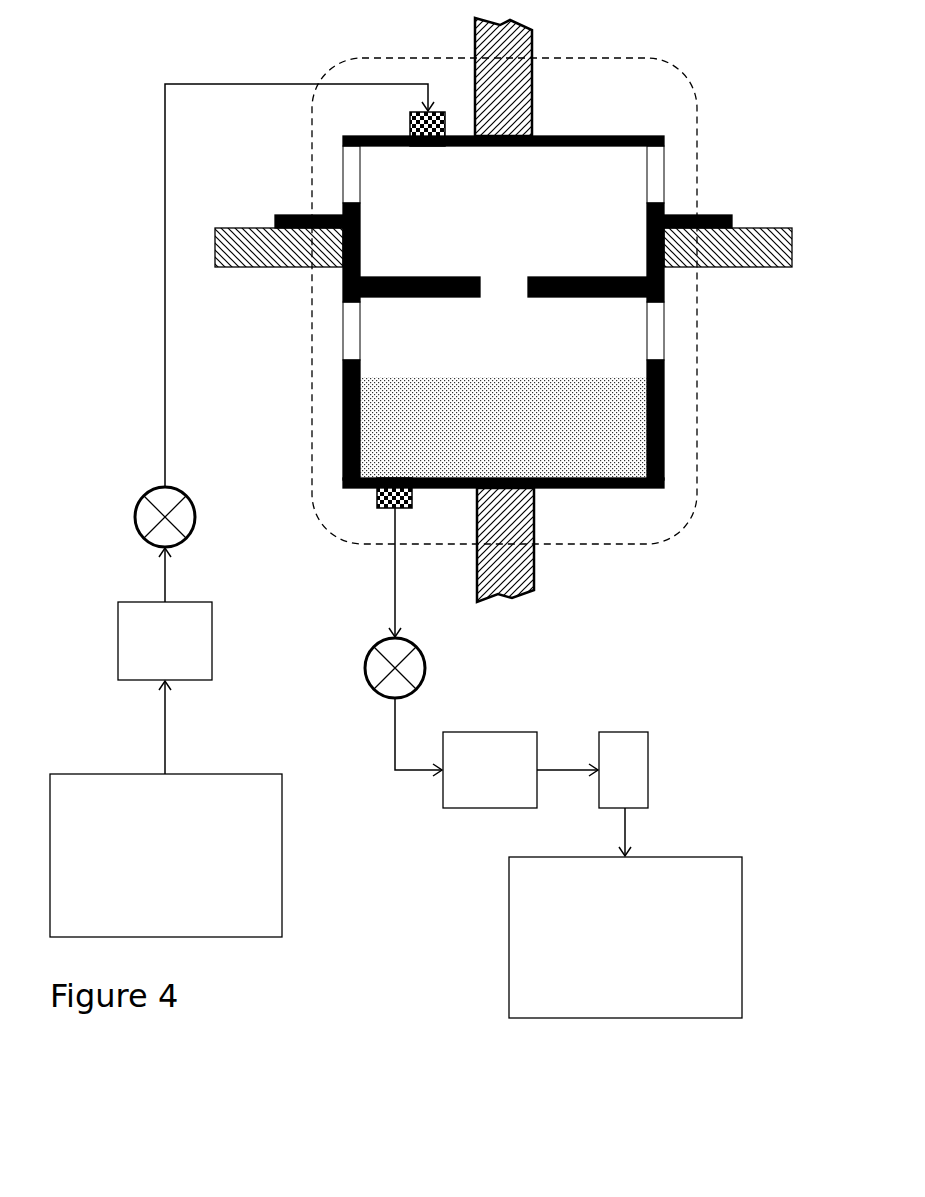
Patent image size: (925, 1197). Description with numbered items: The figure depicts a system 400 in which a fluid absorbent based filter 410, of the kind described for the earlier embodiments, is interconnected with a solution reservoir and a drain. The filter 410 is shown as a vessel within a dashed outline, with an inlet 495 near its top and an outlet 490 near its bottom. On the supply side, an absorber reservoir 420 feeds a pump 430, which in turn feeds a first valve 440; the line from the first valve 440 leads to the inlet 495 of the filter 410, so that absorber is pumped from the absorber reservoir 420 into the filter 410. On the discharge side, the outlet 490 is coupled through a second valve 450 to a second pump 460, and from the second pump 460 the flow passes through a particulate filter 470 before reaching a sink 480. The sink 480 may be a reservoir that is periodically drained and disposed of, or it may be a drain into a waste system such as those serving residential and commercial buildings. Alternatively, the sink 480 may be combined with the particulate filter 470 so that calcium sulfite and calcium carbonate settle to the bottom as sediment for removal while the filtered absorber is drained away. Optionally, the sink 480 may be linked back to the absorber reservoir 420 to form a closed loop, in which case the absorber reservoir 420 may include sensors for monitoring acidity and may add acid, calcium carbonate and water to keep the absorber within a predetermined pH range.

The system 400 is at (421, 518).
The filter 410 is at (503, 310).
The absorber reservoir 420 is at (166, 855).
The pump 430 is at (165, 641).
The first valve 440 is at (138, 517).
The second valve 450 is at (368, 668).
The second pump 460 is at (490, 770).
The particulate filter 470 is at (650, 770).
The sink 480 is at (625, 937).
The outlet 490 is at (377, 500).
The inlet 495 is at (398, 117).